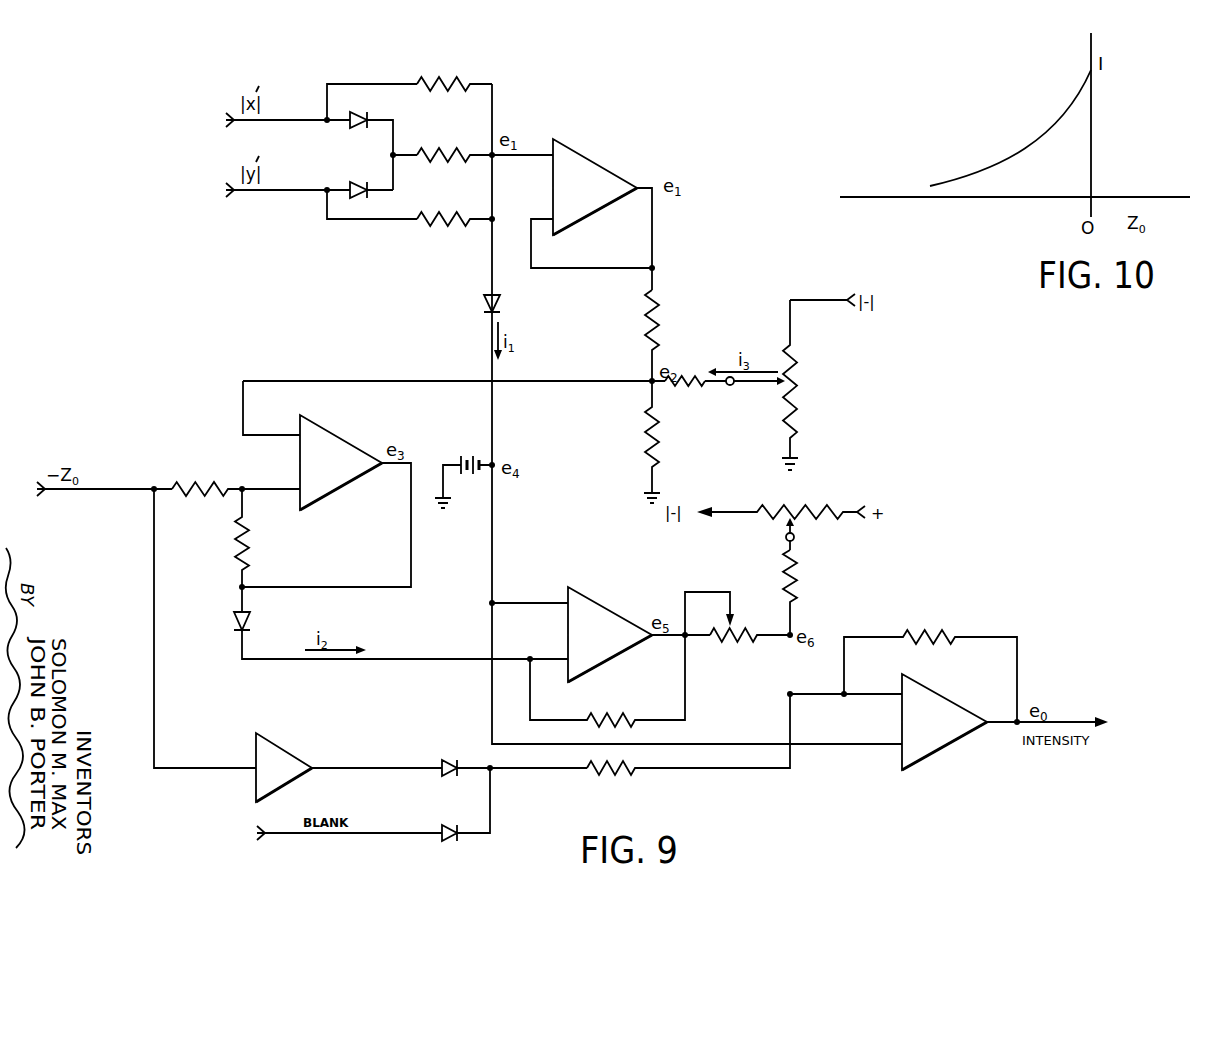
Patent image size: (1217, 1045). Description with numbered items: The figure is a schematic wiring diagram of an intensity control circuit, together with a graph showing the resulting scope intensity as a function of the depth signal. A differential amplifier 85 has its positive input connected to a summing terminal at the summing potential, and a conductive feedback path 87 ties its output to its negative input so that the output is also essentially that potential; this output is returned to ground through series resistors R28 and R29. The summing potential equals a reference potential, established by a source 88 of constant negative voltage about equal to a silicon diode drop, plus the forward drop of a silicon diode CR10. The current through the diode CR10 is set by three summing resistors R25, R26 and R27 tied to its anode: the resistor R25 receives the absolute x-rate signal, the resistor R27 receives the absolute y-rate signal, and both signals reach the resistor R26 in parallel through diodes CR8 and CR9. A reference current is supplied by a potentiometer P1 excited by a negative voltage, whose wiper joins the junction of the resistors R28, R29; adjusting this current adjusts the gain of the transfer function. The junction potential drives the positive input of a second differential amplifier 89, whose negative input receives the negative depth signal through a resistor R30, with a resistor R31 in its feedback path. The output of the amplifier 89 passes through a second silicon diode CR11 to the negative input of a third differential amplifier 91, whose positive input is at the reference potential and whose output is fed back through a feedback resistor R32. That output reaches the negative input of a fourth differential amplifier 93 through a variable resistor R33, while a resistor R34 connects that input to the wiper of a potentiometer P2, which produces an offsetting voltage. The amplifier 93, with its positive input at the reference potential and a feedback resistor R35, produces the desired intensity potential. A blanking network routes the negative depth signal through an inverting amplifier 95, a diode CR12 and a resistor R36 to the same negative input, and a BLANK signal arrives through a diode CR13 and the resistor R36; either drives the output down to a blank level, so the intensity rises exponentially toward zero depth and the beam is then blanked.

The differential amplifier 85 is at (590, 156).
The conductive feedback path 87 is at (580, 268).
The source of constant negative voltage 88 is at (483, 488).
The second differential amplifier 89 is at (336, 437).
The third differential amplifier 91 is at (600, 605).
The fourth differential amplifier 93 is at (956, 741).
The inverting amplifier 95 is at (287, 752).
The summing resistor R25 is at (454, 74).
The summing resistor R26 is at (454, 145).
The summing resistor R27 is at (454, 209).
The resistor R28 is at (670, 335).
The resistor R29 is at (670, 437).
The resistor R30 is at (227, 479).
The resistor R31 is at (284, 550).
The feedback resistor R32 is at (607, 681).
The variable resistor R33 is at (737, 632).
The resistor R34 is at (809, 592).
The feedback resistor R35 is at (930, 666).
The resistor R36 is at (688, 747).
The diode CR8 is at (350, 131).
The diode CR9 is at (350, 180).
The silicon diode CR10 is at (521, 306).
The second silicon diode CR11 is at (268, 624).
The diode CR12 is at (452, 783).
The diode CR13 is at (452, 848).
The potentiometer P1 is at (804, 397).
The potentiometer P2 is at (811, 500).